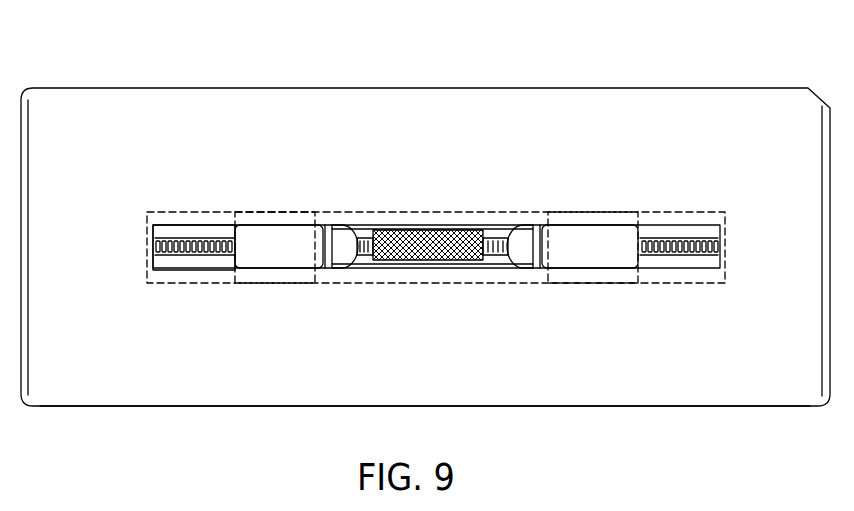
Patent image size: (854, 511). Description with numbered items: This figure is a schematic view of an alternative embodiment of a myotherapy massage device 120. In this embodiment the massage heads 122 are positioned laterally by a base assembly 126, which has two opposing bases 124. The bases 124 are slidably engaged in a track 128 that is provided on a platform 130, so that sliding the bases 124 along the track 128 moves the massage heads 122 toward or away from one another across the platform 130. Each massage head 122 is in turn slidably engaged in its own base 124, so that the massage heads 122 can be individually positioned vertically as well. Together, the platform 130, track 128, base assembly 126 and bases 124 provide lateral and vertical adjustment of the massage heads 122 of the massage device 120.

The myotherapy massage device 120 is at (209, 64).
The massage heads 122 is at (348, 240).
The bases 124 is at (595, 239).
The base assembly 126 is at (668, 184).
The track 128 is at (178, 221).
The platform 130 is at (172, 390).